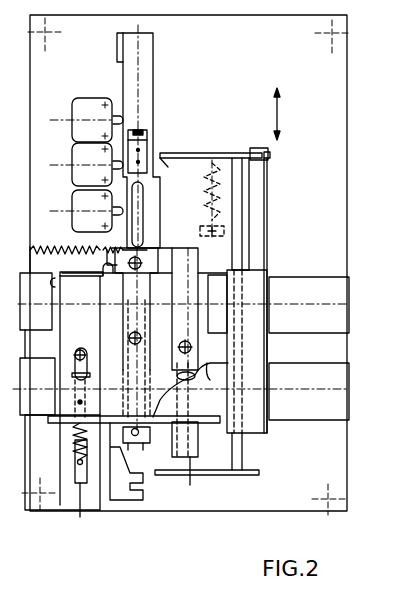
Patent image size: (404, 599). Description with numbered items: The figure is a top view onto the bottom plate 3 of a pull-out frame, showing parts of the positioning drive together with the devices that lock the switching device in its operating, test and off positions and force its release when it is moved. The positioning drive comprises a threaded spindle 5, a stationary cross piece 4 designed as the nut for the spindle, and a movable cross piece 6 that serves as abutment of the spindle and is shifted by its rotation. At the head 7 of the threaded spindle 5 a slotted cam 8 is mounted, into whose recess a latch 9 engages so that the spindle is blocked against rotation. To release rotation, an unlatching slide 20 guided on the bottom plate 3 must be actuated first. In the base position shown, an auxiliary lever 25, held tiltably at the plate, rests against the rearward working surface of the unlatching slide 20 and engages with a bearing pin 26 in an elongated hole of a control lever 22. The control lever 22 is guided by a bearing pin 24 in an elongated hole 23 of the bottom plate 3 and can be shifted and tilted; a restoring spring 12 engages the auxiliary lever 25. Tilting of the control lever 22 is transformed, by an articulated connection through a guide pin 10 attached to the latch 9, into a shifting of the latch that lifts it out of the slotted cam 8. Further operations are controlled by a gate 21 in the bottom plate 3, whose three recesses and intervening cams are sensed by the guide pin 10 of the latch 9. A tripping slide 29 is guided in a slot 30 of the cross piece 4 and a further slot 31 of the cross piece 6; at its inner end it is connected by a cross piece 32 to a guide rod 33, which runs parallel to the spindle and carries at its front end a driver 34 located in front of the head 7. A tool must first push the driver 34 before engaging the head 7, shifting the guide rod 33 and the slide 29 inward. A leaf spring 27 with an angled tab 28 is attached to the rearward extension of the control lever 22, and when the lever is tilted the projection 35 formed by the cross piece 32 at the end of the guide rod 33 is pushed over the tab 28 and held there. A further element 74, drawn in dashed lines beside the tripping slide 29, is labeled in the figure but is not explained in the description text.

The bottom plate 3 is at (336, 88).
The stationary cross piece 4 is at (310, 282).
The threaded spindle 5 is at (177, 376).
The movable cross piece 6 is at (315, 370).
The head 7 is at (191, 456).
The slotted cam 8 is at (198, 424).
The latch 9 is at (60, 422).
The guide pin 10 is at (140, 443).
The restoring spring 12 is at (55, 247).
The unlatching slide 20 is at (70, 500).
The gate 21 is at (117, 500).
The control lever 22 is at (148, 97).
The elongated hole 23 is at (128, 368).
The bearing pin 24 is at (129, 337).
The auxiliary lever 25 is at (202, 263).
The bearing pin 26 is at (143, 258).
The leaf spring 27 is at (144, 148).
The tab 28 is at (136, 130).
The tripping slide 29 is at (261, 193).
The slot 30 is at (265, 325).
The slot 31 is at (268, 407).
The cross piece 32 is at (228, 153).
The guide rod 33 is at (241, 238).
The driver 34 is at (225, 477).
The projection 35 is at (163, 157).
The spring 74 is at (203, 194).